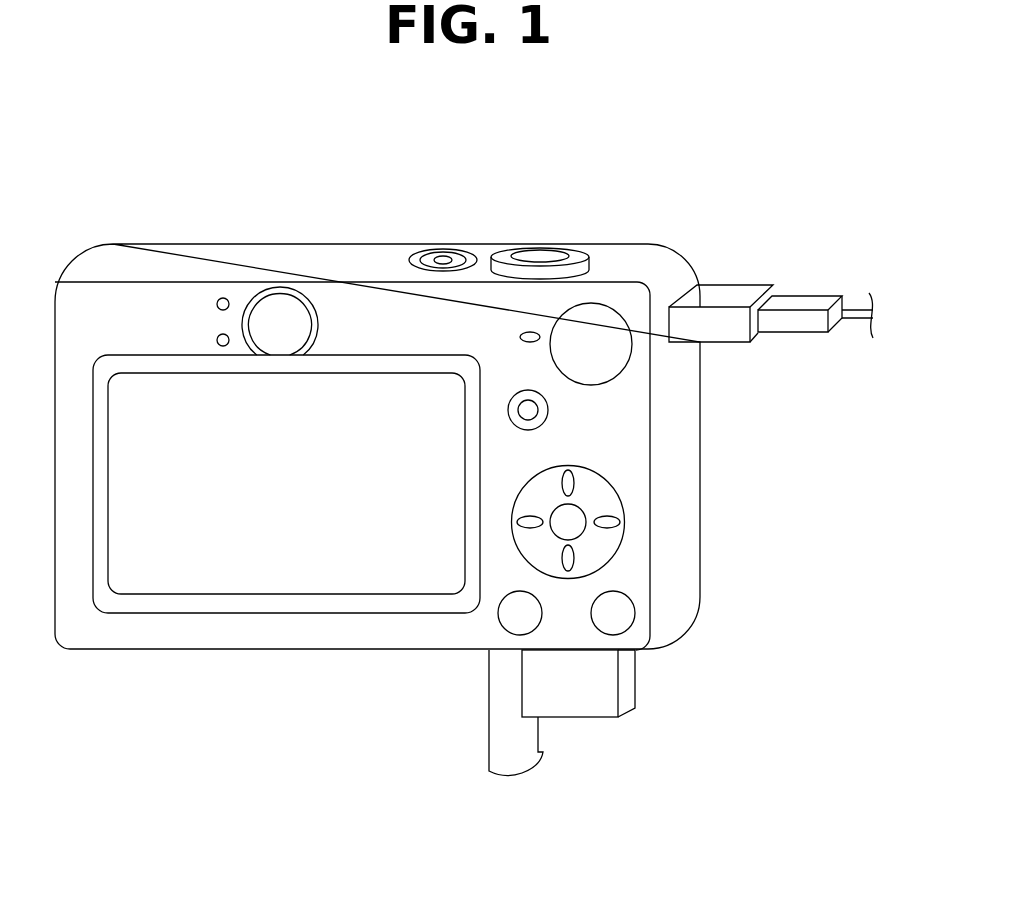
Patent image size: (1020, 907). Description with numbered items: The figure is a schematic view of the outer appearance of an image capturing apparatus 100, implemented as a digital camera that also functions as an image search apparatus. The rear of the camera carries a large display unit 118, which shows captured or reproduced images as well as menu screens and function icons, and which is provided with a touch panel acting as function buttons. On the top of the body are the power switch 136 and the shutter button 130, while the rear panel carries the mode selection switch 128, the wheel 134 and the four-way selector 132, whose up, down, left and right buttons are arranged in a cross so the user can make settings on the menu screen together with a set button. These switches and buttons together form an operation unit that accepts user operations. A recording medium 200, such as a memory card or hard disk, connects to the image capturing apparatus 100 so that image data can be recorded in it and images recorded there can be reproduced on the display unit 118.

The image capturing apparatus 100 is at (382, 146).
The display unit 118 is at (167, 392).
The power switch 136 is at (443, 258).
The shutter button 130 is at (538, 255).
The mode selection switch 128 is at (622, 352).
The wheel 134 is at (595, 468).
The 4-way selector 132 is at (606, 515).
The recording medium 200 is at (578, 708).